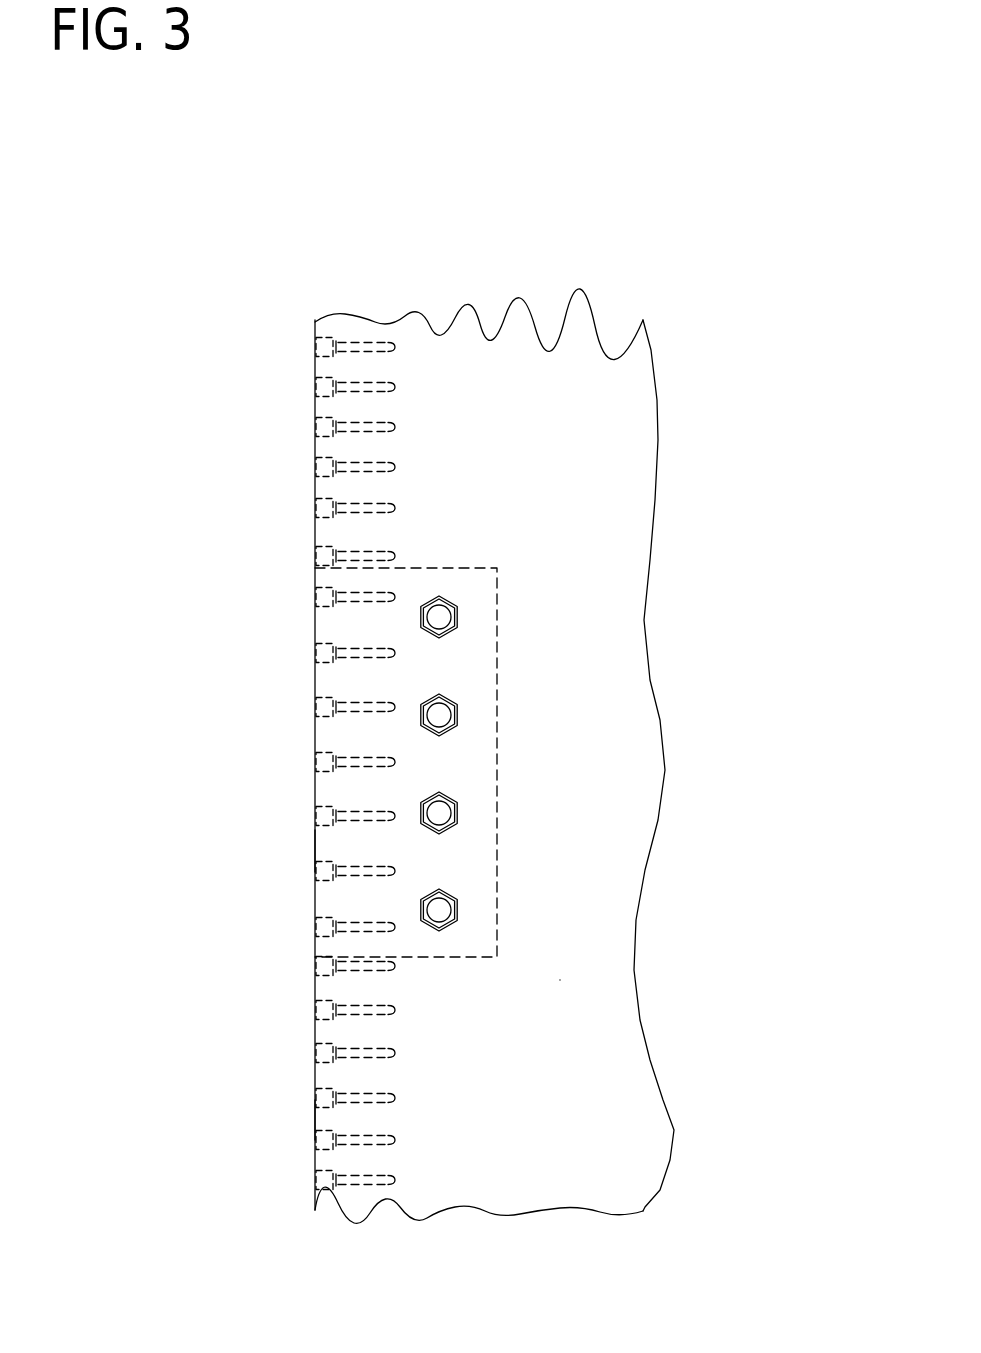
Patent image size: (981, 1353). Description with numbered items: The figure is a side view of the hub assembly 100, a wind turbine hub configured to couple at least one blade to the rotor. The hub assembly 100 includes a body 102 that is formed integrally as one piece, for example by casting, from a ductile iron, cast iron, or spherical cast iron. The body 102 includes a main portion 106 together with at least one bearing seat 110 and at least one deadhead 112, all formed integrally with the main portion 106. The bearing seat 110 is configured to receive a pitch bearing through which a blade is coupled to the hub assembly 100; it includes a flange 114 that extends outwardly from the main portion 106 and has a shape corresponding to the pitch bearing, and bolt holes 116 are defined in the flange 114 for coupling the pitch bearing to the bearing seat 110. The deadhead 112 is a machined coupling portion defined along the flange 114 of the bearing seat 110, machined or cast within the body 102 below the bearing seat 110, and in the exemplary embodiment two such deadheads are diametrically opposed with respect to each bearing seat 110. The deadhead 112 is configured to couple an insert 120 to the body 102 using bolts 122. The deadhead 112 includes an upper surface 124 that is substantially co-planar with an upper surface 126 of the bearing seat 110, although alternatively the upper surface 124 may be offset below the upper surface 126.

The hub assembly 100 is at (678, 233).
The body 102 is at (611, 646).
The main portion 106 is at (598, 809).
The bearing seat 110 is at (331, 1235).
The deadhead 112 is at (362, 787).
The flange 114 is at (322, 1158).
The bolt holes 116 is at (317, 1052).
The insert 120 is at (378, 882).
The bolts 122 is at (430, 711).
The upper surface of deadhead 124 is at (315, 850).
The upper surface of bearing seat 126 is at (315, 1120).